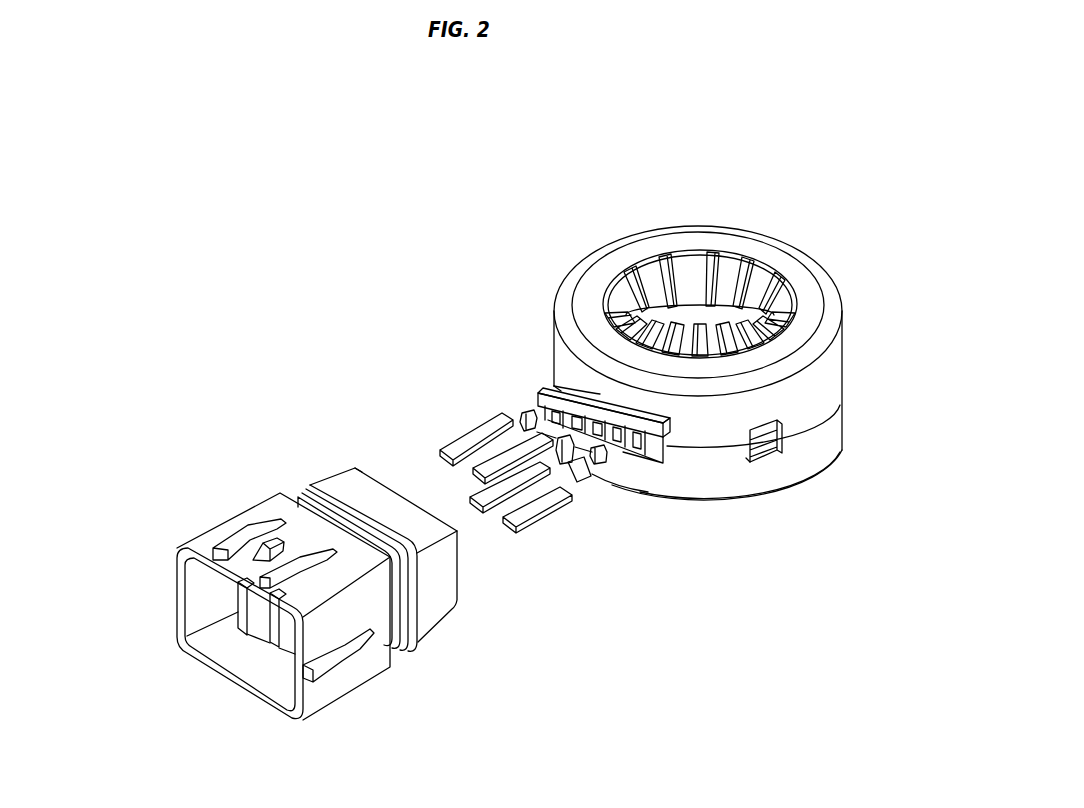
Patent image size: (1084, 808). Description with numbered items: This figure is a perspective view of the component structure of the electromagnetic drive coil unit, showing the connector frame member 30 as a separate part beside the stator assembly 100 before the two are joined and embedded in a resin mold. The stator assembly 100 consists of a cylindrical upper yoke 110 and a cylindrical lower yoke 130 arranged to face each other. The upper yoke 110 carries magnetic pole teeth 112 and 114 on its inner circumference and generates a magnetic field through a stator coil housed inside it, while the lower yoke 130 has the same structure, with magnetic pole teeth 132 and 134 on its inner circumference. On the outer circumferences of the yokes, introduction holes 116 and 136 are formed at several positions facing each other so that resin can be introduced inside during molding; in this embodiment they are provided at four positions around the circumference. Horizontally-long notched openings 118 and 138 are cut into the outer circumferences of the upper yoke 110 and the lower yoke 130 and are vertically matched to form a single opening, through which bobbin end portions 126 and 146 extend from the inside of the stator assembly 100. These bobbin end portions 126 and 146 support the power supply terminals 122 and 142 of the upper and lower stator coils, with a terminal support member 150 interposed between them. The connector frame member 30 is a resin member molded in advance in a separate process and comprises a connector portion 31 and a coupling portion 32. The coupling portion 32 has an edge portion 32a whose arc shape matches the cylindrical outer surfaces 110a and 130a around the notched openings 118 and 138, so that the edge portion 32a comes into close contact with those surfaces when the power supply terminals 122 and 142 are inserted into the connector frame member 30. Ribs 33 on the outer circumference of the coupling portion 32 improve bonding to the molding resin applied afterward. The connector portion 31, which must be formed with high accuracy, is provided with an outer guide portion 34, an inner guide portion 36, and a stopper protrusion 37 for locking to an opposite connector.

The stator assembly 100 is at (772, 180).
The upper yoke 110 is at (835, 358).
The cylindrical outer surface 110a is at (597, 386).
The magnetic pole teeth 112 is at (690, 268).
The magnetic pole teeth 114 is at (670, 258).
The introduction hole 116 is at (752, 443).
The notched opening 118 is at (561, 391).
The power supply terminal 122 is at (470, 475).
The bobbin end portion 126 is at (540, 393).
The lower yoke 130 is at (830, 414).
The cylindrical outer surface 130a is at (632, 477).
The magnetic pole teeth 132 is at (768, 278).
The magnetic pole teeth 134 is at (727, 278).
The introduction hole 136 is at (780, 445).
The notched opening 138 is at (661, 458).
The power supply terminal 142 is at (506, 523).
The bobbin end portion 146 is at (617, 455).
The terminal support member 150 is at (585, 474).
The connector frame member 30 is at (179, 483).
The connector portion 31 is at (233, 526).
The coupling portion 32 is at (347, 479).
The edge portion 32a is at (367, 478).
The ribs 33 is at (310, 490).
The outer guide portion 34 is at (222, 543).
The inner guide portion 36 is at (272, 602).
The stopper protrusion 37 is at (217, 593).